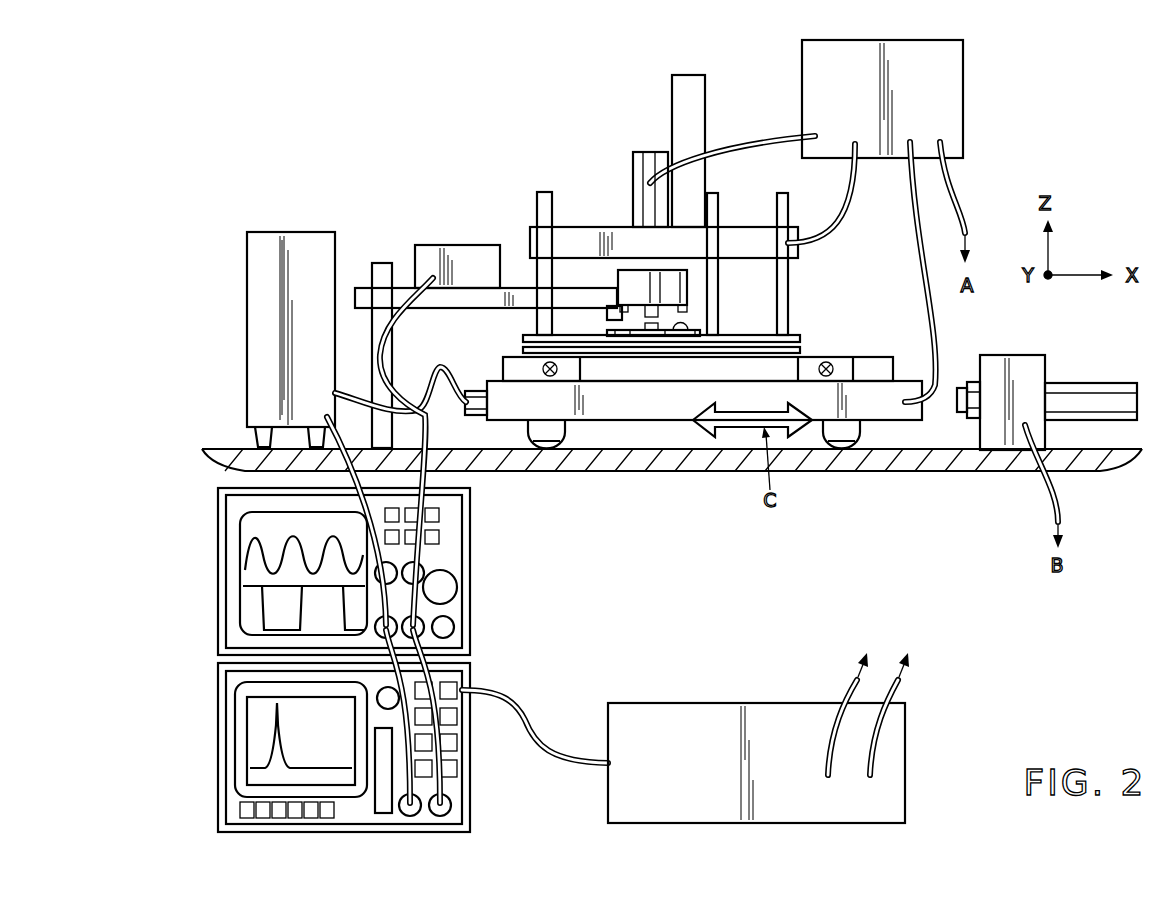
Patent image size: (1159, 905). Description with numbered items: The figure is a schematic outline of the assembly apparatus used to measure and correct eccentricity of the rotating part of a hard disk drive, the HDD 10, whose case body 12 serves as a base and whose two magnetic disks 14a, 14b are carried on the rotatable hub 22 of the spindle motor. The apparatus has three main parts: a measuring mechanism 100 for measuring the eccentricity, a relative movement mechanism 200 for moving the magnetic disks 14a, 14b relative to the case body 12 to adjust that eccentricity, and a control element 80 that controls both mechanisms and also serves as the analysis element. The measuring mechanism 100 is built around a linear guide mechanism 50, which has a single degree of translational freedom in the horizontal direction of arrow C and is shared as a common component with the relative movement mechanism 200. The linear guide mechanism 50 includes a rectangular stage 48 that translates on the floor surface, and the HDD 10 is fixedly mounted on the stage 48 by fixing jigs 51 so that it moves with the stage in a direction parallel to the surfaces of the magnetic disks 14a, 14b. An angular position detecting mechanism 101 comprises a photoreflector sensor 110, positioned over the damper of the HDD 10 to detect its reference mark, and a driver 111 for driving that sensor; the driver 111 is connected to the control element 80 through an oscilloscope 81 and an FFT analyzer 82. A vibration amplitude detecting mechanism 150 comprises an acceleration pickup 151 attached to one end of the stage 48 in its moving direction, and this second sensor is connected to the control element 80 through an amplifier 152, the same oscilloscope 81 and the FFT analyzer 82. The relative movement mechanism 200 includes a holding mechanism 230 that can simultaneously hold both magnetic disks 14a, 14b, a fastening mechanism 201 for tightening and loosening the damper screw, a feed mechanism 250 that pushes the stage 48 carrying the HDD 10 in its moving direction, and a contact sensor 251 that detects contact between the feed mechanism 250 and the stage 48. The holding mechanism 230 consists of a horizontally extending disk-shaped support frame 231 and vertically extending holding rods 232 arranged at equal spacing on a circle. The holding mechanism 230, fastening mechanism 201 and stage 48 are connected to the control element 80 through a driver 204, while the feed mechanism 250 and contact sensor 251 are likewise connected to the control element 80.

The HDD 10 is at (495, 336).
The case body 12 is at (612, 375).
The magnetic disk 14a is at (796, 336).
The magnetic disk 14b is at (800, 348).
The hub 22 is at (648, 355).
The stage 48 is at (580, 384).
The linear guide mechanism 50 is at (908, 433).
The fixing jigs 51 is at (520, 370).
The control element 80 is at (905, 790).
The oscilloscope 81 is at (470, 572).
The FFT analyzer 82 is at (470, 783).
The measuring mechanism 100 is at (363, 202).
The angular position detecting mechanism 101 is at (302, 180).
The photoreflector sensor 110 is at (606, 290).
The driver 111 is at (432, 245).
The vibration amplitude detecting mechanism 150 is at (236, 370).
The acceleration pickup 151 is at (468, 420).
The amplifier 152 is at (247, 277).
The relative movement mechanism 200 is at (739, 128).
The fastening mechanism 201 is at (640, 152).
The driver 204 is at (963, 90).
The holding mechanism 230 is at (806, 225).
The support frame 231 is at (530, 240).
The holding rods 232 is at (544, 192).
The feed mechanism 250 is at (1026, 356).
The contact sensor 251 is at (960, 380).